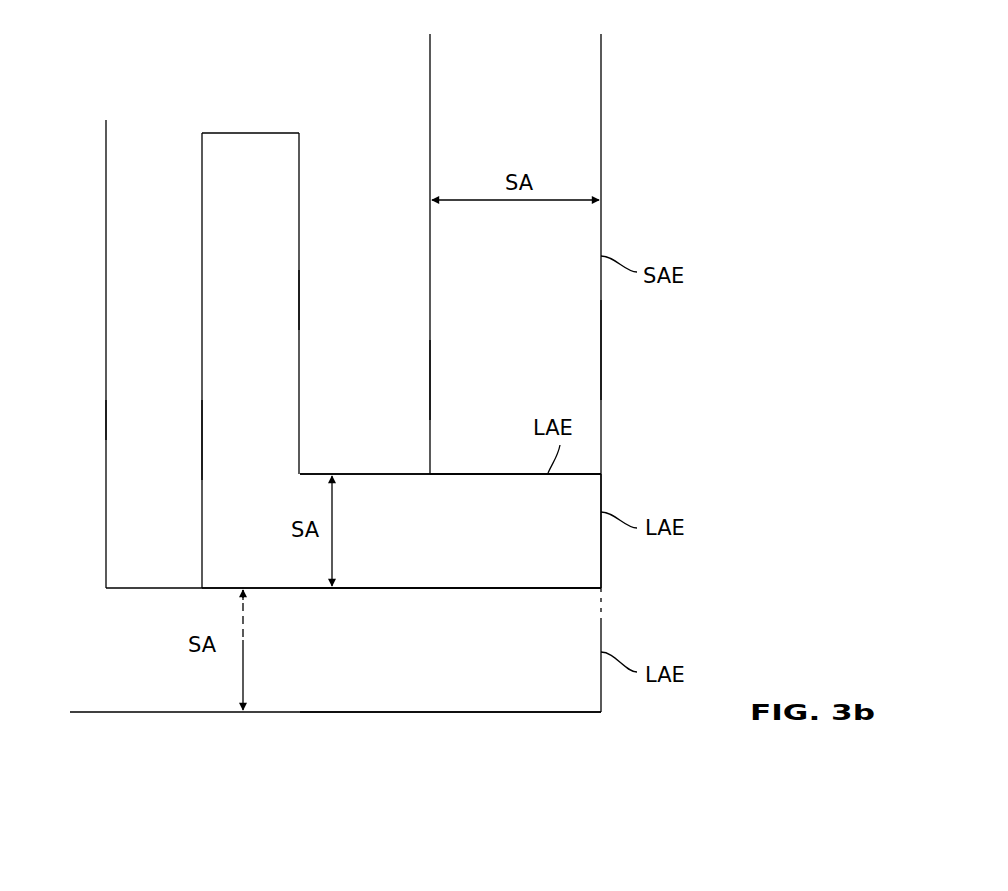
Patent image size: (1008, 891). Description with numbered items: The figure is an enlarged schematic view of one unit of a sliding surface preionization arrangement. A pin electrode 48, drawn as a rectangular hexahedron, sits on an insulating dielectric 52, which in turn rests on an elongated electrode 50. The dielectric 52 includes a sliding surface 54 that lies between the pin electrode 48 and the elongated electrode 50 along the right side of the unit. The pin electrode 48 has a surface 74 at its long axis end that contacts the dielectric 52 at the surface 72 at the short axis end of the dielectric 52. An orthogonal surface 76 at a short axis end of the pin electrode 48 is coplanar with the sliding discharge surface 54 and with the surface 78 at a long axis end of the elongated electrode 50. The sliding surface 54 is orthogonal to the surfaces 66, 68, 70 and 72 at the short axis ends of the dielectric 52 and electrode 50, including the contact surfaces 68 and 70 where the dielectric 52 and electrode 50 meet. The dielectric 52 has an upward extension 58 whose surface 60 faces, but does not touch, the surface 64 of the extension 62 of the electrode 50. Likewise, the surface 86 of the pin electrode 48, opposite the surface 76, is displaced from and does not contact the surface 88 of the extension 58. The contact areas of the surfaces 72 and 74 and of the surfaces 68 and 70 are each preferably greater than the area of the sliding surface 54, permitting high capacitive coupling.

The pin electrode 48 is at (533, 306).
The elongated electrode 50 is at (370, 652).
The insulating dielectric 52 is at (407, 537).
The sliding surface 54 is at (601, 543).
The extension 58 is at (266, 395).
The surface of the extension 60 is at (202, 445).
The extension 62 is at (86, 382).
The surface of the extension 64 is at (106, 418).
The surface 66 is at (443, 711).
The contact surface 68 is at (449, 590).
The contact surface 70 is at (472, 588).
The surface 72 is at (452, 476).
The surface 74 is at (483, 473).
The orthogonal surface 76 is at (601, 355).
The surface 78 is at (601, 640).
The surface 86 is at (431, 385).
The surface 88 is at (299, 295).